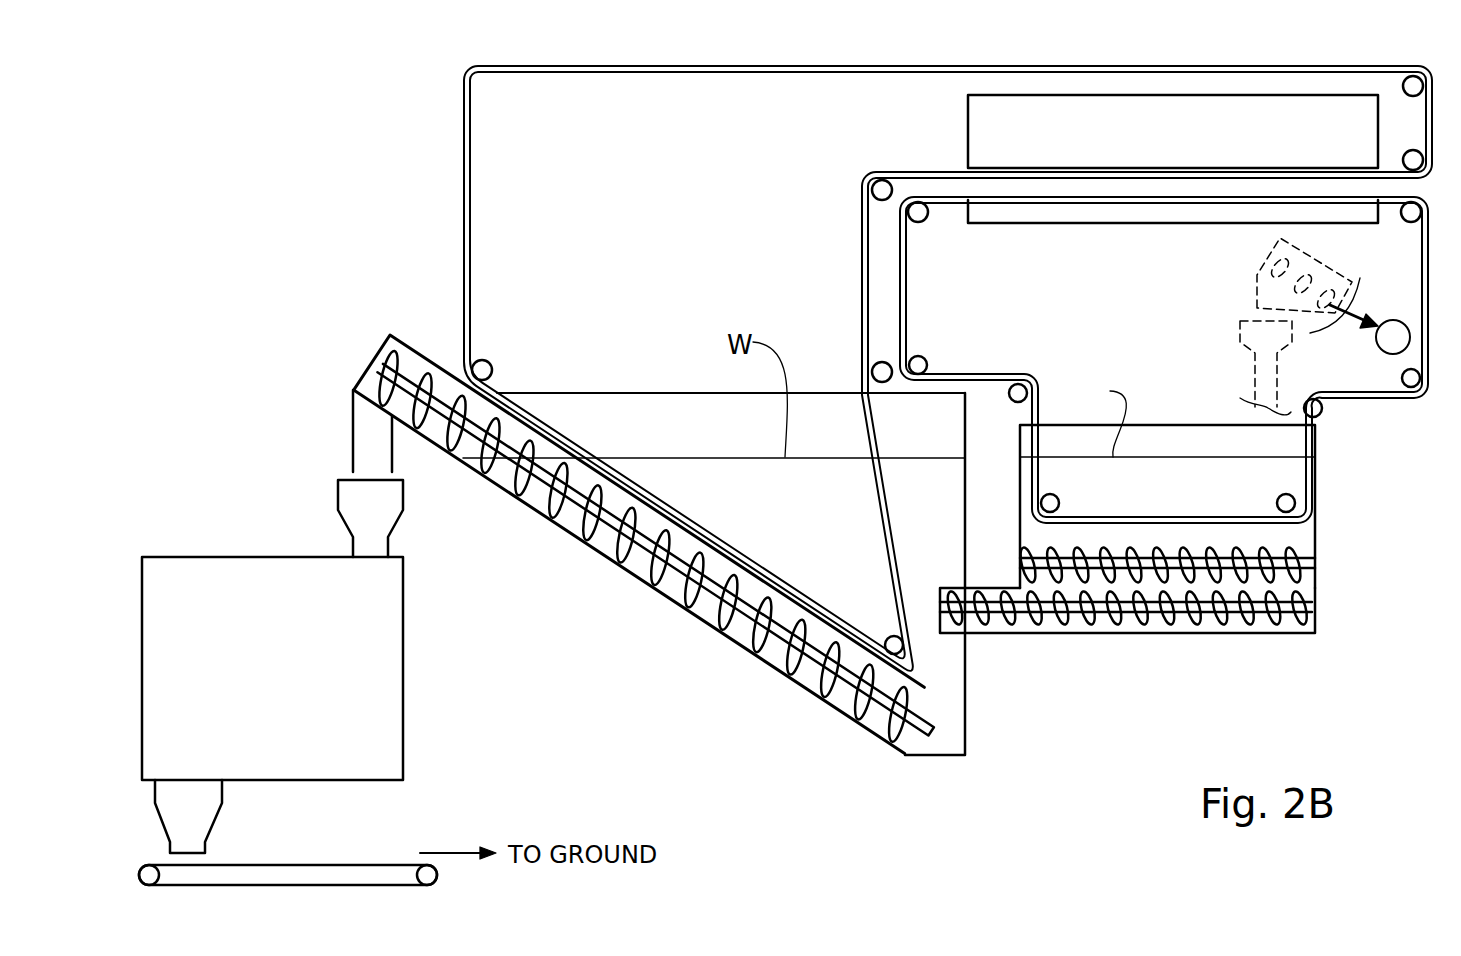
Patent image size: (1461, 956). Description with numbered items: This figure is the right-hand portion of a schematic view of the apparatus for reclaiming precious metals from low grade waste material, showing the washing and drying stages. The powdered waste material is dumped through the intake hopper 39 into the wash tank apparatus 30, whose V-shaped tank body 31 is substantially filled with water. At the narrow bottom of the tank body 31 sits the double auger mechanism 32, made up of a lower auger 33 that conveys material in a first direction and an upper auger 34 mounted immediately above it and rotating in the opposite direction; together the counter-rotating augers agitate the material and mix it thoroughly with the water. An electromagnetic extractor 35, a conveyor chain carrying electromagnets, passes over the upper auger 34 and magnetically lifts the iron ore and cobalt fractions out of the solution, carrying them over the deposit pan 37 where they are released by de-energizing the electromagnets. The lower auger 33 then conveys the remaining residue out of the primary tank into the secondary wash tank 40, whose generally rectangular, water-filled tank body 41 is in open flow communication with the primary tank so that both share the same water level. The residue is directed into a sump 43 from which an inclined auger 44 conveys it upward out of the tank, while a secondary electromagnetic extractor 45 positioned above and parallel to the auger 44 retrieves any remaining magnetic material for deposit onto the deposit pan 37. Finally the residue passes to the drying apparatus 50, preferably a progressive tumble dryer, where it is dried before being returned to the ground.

The wash tank apparatus 30 is at (1164, 442).
The tank body 31 is at (1177, 425).
The double auger mechanism 32 is at (1330, 588).
The lower auger 33 is at (1120, 615).
The upper auger 34 is at (1280, 560).
The electromagnetic extractor 35 is at (1176, 517).
The deposit pan 37 is at (1010, 224).
The intake hopper 39 is at (1240, 330).
The secondary wash tank 40 is at (656, 539).
The tank body 41 is at (623, 392).
The sump 43 is at (932, 758).
The auger 44 is at (607, 557).
The secondary electromagnetic extractor 45 is at (700, 533).
The drying apparatus 50 is at (404, 700).